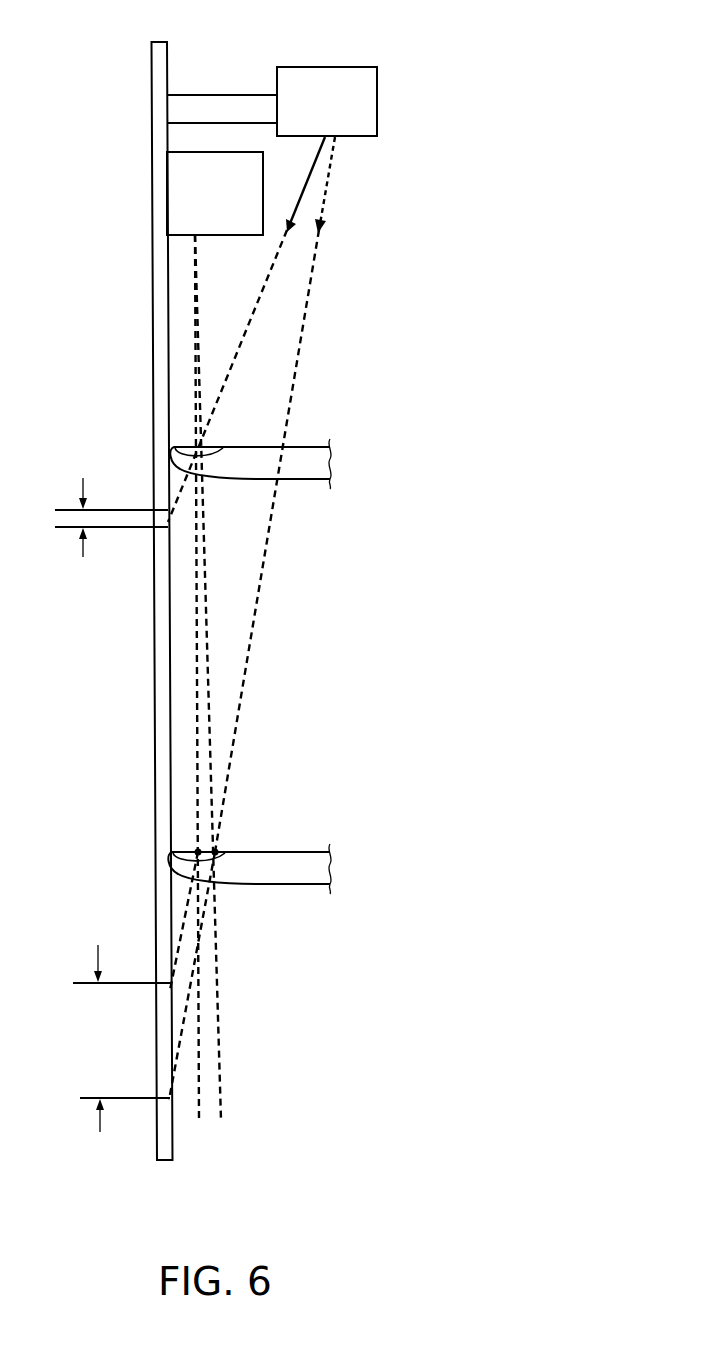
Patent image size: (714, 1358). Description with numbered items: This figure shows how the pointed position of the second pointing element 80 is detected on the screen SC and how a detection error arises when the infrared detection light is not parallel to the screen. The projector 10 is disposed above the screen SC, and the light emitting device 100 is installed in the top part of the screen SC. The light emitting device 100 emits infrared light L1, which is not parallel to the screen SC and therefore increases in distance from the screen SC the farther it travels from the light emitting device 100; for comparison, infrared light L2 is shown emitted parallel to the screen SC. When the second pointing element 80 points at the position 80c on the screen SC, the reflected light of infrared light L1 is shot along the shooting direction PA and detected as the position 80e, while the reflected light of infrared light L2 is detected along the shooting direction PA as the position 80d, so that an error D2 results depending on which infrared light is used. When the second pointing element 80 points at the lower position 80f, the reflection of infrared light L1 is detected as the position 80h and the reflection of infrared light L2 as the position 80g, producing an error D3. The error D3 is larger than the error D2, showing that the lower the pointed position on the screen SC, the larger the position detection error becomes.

The projector 10 is at (345, 67).
The light emitting device 100 is at (168, 182).
The second pointing element 80 is at (315, 446).
The position 80c is at (158, 450).
The position 80d is at (164, 507).
The position 80e is at (162, 533).
The position 80f is at (158, 852).
The position 80g is at (162, 972).
The position 80h is at (162, 1106).
The infrared light L1 is at (208, 672).
The infrared light L2 is at (197, 705).
The screen SC is at (158, 782).
The shooting direction PA is at (262, 494).
The error D2 is at (96, 517).
The error D3 is at (122, 1038).